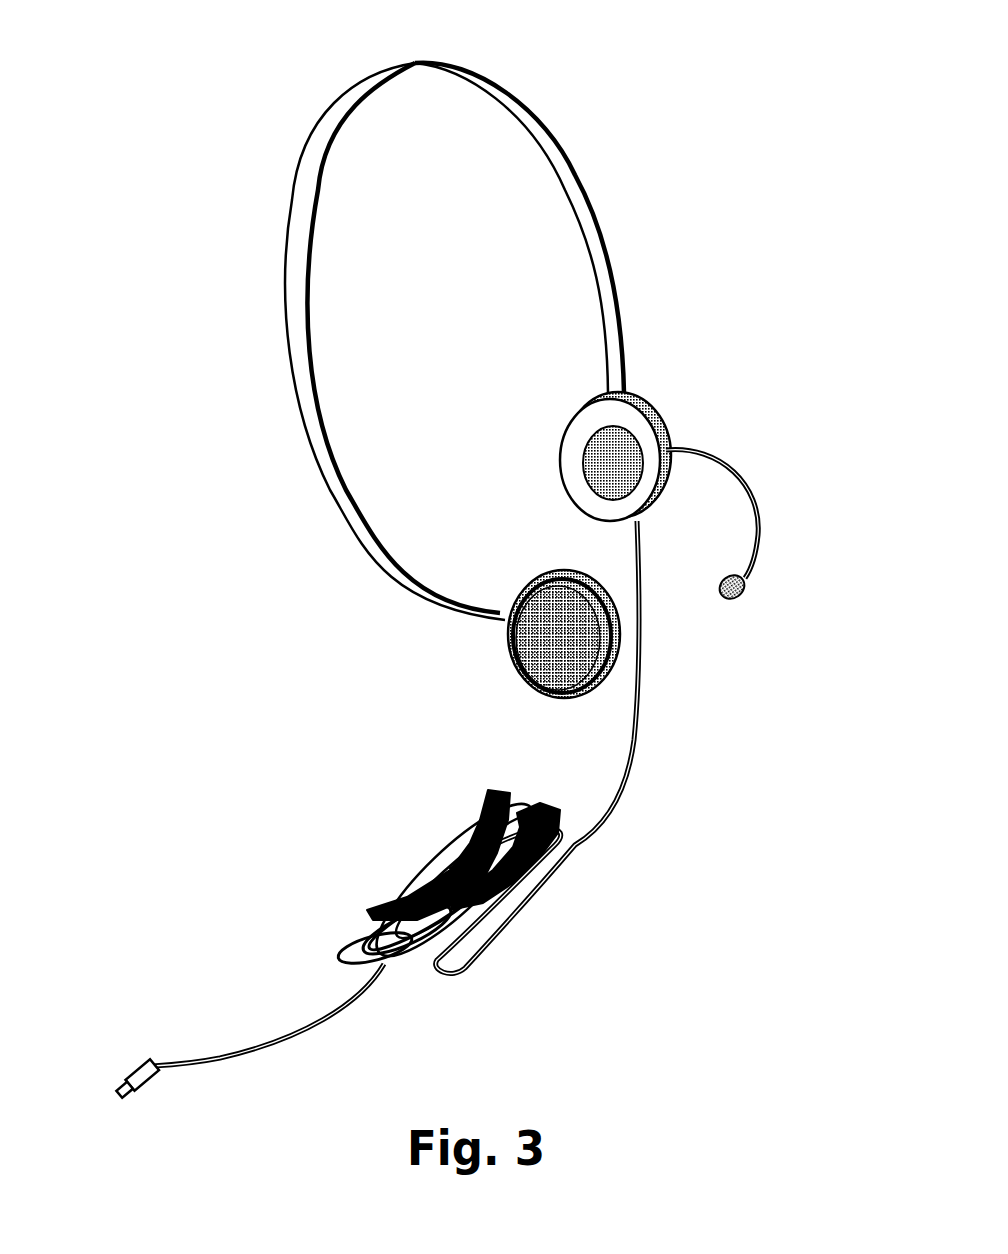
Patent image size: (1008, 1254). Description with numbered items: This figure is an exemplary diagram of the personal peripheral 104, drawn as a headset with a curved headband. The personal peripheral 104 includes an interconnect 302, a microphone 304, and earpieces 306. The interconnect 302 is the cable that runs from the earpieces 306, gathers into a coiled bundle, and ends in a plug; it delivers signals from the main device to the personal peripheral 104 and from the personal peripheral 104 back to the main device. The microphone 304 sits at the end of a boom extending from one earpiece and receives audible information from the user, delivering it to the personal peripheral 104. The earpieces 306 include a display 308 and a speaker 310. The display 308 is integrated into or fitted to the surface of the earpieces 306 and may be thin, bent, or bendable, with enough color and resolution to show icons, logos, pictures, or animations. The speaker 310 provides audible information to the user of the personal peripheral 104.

The personal peripheral 104 is at (258, 42).
The interconnect 302 is at (440, 878).
The microphone 304 is at (743, 590).
The earpieces 306 is at (537, 577).
The display 308 is at (540, 641).
The speaker 310 is at (626, 450).